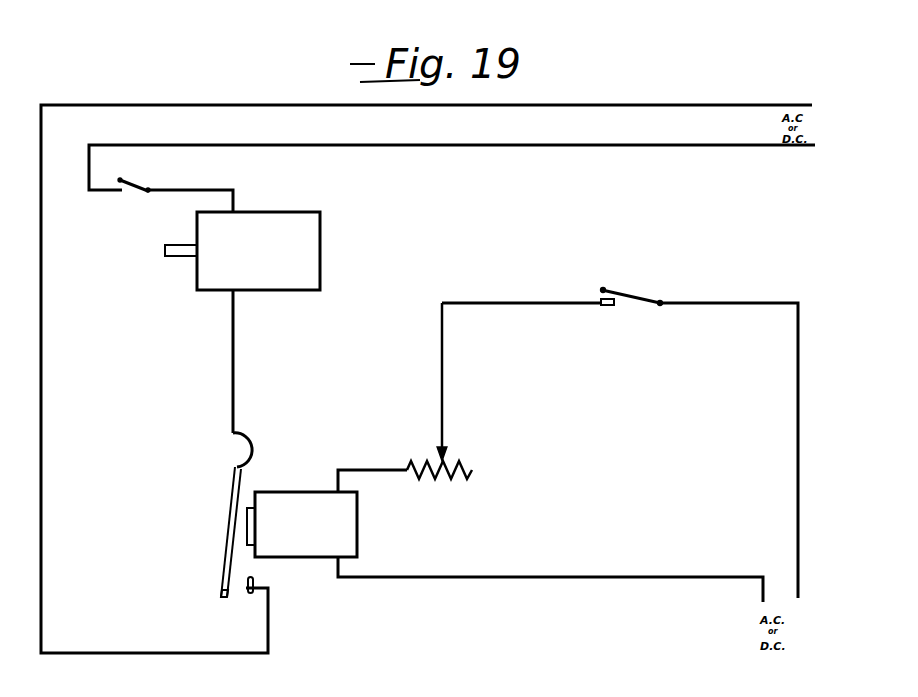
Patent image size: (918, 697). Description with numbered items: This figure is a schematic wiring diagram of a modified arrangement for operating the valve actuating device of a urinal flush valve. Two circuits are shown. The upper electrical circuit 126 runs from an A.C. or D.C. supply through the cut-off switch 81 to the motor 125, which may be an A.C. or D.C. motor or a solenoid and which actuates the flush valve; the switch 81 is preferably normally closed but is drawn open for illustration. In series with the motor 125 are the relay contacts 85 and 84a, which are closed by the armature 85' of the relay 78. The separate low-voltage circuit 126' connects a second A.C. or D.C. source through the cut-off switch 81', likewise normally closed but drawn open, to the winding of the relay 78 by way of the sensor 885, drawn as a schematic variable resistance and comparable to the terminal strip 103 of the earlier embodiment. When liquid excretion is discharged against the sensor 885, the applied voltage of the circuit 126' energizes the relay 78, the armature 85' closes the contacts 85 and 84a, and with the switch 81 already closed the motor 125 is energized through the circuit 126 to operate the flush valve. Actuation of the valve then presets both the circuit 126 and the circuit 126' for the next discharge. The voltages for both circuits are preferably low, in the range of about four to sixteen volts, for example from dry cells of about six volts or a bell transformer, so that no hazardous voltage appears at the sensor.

The electrical circuit 126 is at (428, 361).
The cut-off switch 81 is at (149, 172).
The motor 125 is at (242, 251).
The relay armature 85' is at (209, 515).
The relay contact 85 is at (200, 611).
The relay contact 84a is at (250, 593).
The relay 78 is at (505, 536).
The sensor 885 is at (422, 457).
The terminal strip 103 is at (457, 452).
The low-voltage circuit 126' is at (620, 430).
The cut-off switch 81' is at (640, 283).